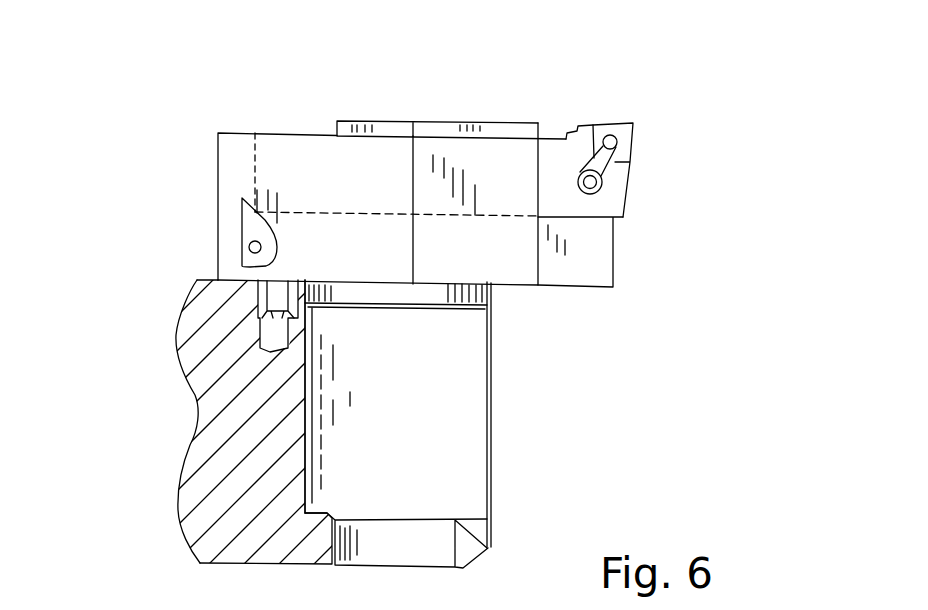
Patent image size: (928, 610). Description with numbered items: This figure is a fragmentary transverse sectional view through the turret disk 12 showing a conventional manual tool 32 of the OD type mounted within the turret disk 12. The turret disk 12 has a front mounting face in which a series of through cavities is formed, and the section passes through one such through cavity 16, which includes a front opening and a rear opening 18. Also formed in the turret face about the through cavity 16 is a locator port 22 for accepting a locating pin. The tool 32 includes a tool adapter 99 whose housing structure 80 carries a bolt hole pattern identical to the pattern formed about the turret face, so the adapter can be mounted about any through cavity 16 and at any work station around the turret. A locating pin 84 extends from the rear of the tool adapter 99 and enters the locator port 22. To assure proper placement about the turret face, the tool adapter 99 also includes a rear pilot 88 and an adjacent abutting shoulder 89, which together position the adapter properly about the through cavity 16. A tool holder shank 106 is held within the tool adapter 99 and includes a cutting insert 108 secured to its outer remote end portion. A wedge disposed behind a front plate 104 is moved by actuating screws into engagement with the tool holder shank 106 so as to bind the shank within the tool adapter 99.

The turret disk 12 is at (232, 500).
The through cavity 16 is at (423, 463).
The rear opening 18 is at (433, 520).
The locator port 22 is at (272, 340).
The tool 32 is at (688, 110).
The housing structure 80 is at (280, 153).
The locating pin 84 is at (258, 305).
The rear pilot 88 is at (477, 307).
The abutting shoulder 89 is at (492, 290).
The tool adapter 99 is at (203, 170).
The front plate 104 is at (473, 122).
The tool holder shank 106 is at (603, 202).
The cutting insert 108 is at (615, 130).